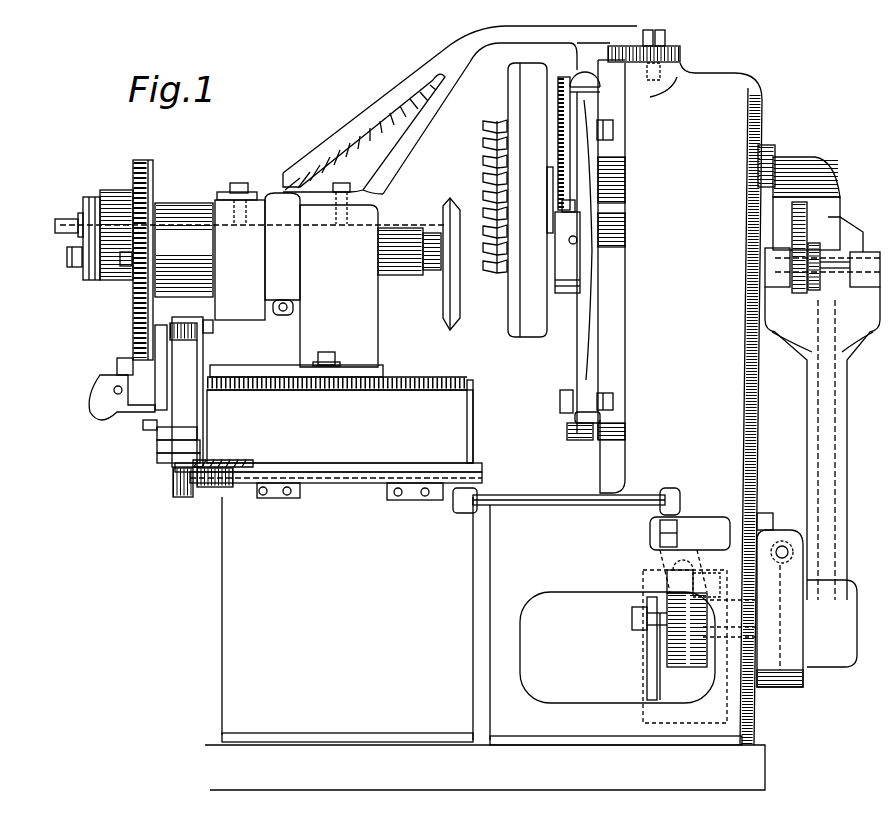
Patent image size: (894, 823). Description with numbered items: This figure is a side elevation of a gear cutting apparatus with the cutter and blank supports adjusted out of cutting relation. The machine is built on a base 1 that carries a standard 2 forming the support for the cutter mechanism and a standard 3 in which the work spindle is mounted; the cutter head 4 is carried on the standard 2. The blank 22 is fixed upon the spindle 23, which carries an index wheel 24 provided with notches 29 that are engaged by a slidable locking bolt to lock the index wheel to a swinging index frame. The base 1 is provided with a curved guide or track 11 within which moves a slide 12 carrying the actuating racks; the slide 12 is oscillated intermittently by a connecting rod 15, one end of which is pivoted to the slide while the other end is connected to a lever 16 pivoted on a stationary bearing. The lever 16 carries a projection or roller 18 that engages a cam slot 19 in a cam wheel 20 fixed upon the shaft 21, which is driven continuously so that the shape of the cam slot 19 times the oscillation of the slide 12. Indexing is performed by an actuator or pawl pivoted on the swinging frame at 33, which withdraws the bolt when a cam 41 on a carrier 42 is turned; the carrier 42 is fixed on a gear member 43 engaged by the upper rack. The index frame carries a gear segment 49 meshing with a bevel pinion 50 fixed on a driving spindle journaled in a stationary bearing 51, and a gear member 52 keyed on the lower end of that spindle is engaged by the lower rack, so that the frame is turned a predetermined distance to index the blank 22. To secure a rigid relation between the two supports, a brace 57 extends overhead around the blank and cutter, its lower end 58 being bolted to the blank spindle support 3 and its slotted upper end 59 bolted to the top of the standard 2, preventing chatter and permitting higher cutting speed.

The base 1 is at (485, 643).
The standard 2 is at (522, 385).
The standard 3 is at (252, 275).
The cutter head 4 is at (528, 330).
The curved guide or track 11 is at (315, 492).
The slide 12 is at (268, 465).
The connecting rod 15 is at (565, 506).
The lever 16 is at (688, 535).
The projection or roller 18 is at (667, 576).
The cam slot 19 is at (681, 665).
The cam wheel 20 is at (672, 642).
The shaft 21 is at (787, 668).
The blank 22 is at (458, 320).
The spindle 23 is at (100, 292).
The index wheel 24 is at (106, 353).
The notches 29 is at (150, 172).
The pivot (shaft) 33 is at (112, 389).
The cam 41 is at (160, 424).
The carrier 42 is at (163, 433).
The gear member 43 is at (175, 446).
The gear segment 49 is at (196, 297).
The bevel pinion 50 is at (197, 337).
The stationary bearing 51 is at (189, 368).
The gear member 52 is at (165, 456).
The brace 57 is at (395, 98).
The lower end of brace 58 is at (368, 196).
The upper end of brace 59 is at (677, 56).